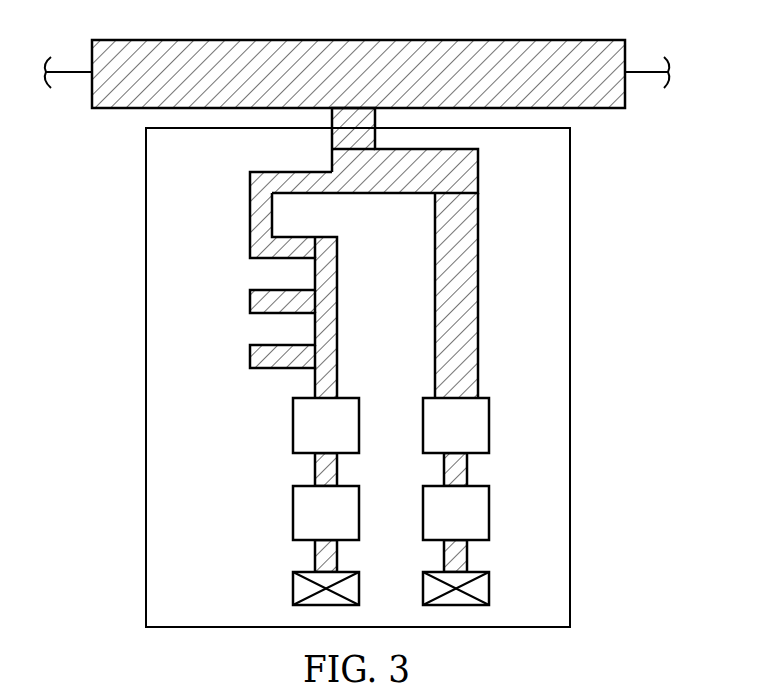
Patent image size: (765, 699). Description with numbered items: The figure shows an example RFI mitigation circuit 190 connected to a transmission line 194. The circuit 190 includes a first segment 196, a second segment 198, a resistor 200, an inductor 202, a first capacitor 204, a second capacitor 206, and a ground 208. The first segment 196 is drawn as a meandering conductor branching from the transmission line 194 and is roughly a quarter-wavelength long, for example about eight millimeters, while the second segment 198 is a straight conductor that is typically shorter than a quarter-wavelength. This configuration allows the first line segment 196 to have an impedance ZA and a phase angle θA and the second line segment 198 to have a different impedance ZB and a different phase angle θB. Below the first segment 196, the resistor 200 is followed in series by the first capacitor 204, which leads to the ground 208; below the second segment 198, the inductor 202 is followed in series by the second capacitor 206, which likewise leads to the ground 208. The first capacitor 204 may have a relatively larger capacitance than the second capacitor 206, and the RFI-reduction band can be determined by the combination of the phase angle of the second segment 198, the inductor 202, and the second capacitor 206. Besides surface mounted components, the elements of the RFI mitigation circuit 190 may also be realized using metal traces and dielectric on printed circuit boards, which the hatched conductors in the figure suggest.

The RFI mitigation circuit 190 is at (580, 392).
The transmission line 194 is at (405, 40).
The first segment 196 is at (250, 213).
The second segment 198 is at (479, 278).
The resistor 200 is at (293, 426).
The inductor 202 is at (490, 427).
The first capacitor 204 is at (293, 512).
The second capacitor 206 is at (490, 512).
The ground 208 is at (293, 587).